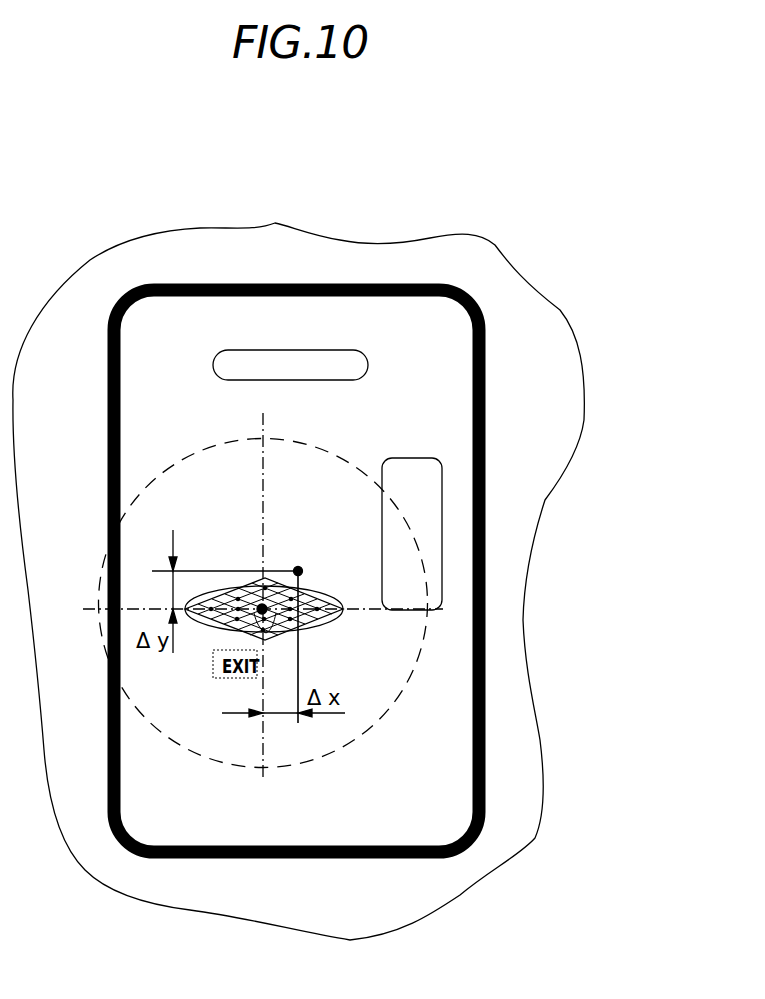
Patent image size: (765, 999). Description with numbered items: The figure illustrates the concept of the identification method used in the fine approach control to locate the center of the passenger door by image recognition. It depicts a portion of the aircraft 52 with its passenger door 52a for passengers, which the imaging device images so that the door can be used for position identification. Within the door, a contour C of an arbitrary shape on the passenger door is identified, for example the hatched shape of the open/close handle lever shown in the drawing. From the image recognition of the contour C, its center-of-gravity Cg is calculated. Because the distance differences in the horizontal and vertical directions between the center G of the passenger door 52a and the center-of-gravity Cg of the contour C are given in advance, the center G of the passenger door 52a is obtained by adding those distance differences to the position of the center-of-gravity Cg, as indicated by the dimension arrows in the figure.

The aircraft 52 is at (495, 286).
The passenger door 52a is at (465, 431).
The center of the passenger door G is at (298, 571).
The contour C is at (343, 608).
The center-of-gravity of the contour Cg is at (262, 609).